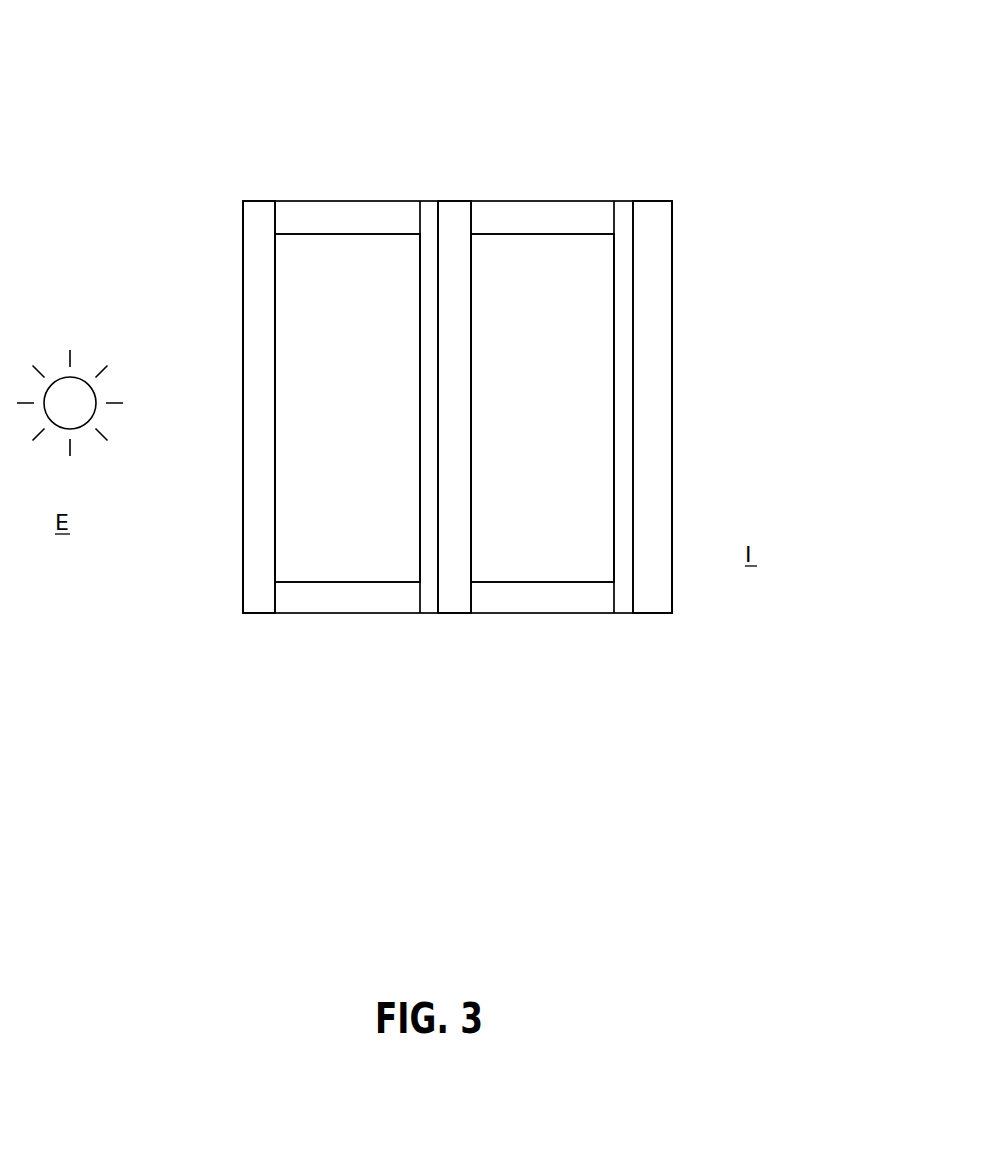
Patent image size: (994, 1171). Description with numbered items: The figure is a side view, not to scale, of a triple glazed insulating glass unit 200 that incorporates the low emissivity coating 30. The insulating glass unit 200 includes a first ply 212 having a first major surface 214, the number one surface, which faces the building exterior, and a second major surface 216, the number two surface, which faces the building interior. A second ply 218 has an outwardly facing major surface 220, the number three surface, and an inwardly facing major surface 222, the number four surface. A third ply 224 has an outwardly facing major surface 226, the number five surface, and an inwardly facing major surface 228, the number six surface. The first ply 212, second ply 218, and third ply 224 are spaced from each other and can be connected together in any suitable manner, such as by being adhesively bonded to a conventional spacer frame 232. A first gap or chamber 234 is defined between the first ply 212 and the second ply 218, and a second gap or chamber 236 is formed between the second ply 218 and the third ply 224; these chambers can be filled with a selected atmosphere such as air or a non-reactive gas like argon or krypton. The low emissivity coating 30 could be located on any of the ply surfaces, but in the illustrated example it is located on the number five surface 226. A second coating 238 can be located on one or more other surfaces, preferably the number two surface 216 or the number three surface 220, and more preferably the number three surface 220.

The insulating glass unit 200 is at (743, 143).
The first ply 212 is at (260, 220).
The first major surface 214 is at (243, 260).
The second major surface 216 is at (277, 265).
The second ply 218 is at (452, 203).
The outwardly facing major surface 220 is at (438, 280).
The inwardly facing major surface 222 is at (471, 272).
The third ply 224 is at (658, 217).
The outwardly facing major surface 226 is at (632, 278).
The inwardly facing major surface 228 is at (672, 233).
The low emissivity coating 30 is at (622, 393).
The spacer frame 232 is at (350, 220).
The first gap or chamber 234 is at (358, 391).
The second gap or chamber 236 is at (565, 391).
The second coating 238 is at (428, 507).